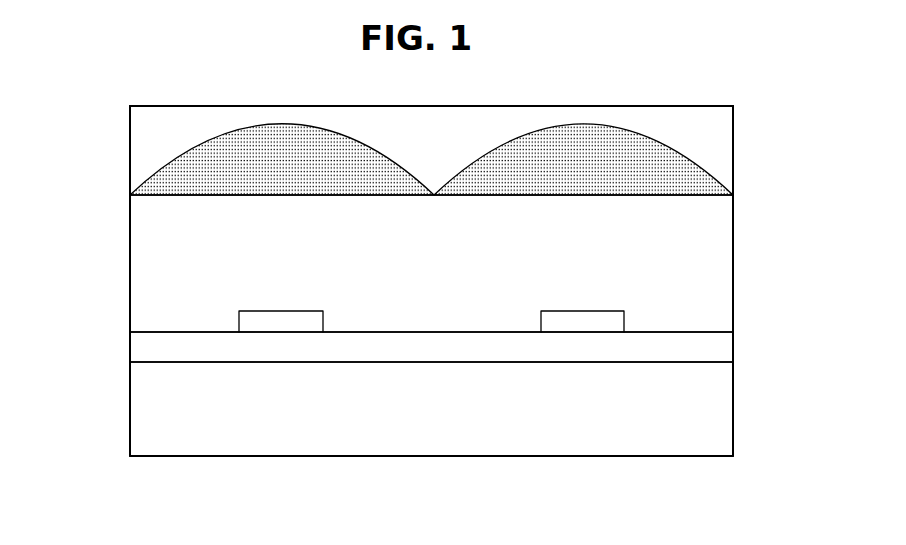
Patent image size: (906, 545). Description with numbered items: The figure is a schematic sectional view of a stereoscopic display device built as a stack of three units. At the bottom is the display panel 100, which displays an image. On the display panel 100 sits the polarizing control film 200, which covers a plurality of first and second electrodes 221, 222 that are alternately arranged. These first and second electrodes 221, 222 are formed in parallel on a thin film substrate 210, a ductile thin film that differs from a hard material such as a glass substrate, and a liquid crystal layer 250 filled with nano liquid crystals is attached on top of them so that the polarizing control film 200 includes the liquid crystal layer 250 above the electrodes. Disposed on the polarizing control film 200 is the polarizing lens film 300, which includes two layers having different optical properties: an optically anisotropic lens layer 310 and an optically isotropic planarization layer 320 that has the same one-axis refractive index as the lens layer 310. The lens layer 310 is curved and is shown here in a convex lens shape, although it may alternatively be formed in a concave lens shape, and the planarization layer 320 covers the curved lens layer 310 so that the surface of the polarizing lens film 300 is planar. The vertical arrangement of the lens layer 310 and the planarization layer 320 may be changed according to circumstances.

The display panel 100 is at (755, 363).
The polarizing control film 200 is at (755, 196).
The thin film substrate 210 is at (145, 350).
The first electrode 221 is at (280, 323).
The second electrode 222 is at (582, 322).
The liquid crystal layer 250 is at (145, 268).
The polarizing lens film 300 is at (755, 107).
The lens layer 310 is at (168, 176).
The planarization layer 320 is at (145, 126).